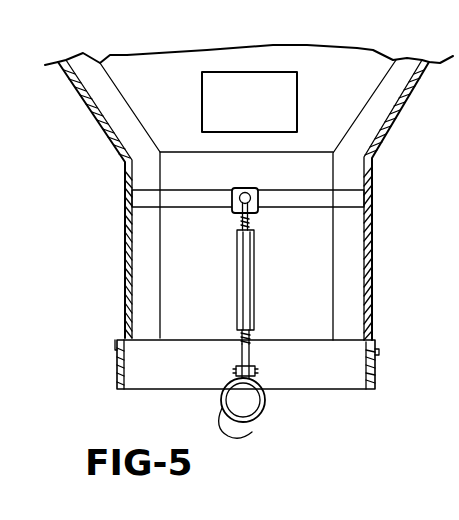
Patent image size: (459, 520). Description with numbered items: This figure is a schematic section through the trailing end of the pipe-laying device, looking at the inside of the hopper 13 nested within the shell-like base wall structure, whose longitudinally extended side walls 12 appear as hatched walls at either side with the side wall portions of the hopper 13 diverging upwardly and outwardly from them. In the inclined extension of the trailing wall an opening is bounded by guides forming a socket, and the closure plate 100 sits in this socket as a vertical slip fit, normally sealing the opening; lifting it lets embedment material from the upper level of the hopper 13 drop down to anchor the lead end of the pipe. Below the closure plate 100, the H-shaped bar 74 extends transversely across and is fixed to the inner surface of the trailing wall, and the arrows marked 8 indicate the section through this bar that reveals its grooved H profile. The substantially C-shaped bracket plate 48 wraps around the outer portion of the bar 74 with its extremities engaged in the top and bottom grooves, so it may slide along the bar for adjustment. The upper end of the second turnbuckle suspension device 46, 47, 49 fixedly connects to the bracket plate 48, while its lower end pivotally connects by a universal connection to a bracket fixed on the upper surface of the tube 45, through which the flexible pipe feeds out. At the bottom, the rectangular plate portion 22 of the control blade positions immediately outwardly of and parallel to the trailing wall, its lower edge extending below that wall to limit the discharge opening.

The side wall 12 is at (375, 277).
The hopper 13 is at (307, 47).
The rectangular plate portion 22 is at (360, 373).
The tube 45 is at (218, 410).
The turnbuckle suspension device 46 is at (253, 339).
The turnbuckle suspension device 47 is at (240, 224).
The C-shaped bracket plate 48 is at (256, 187).
The turnbuckle suspension device 49 is at (237, 300).
The H-shaped bar 74 is at (209, 188).
The closure plate 100 is at (266, 112).
The section line 8- 8 is at (308, 189).